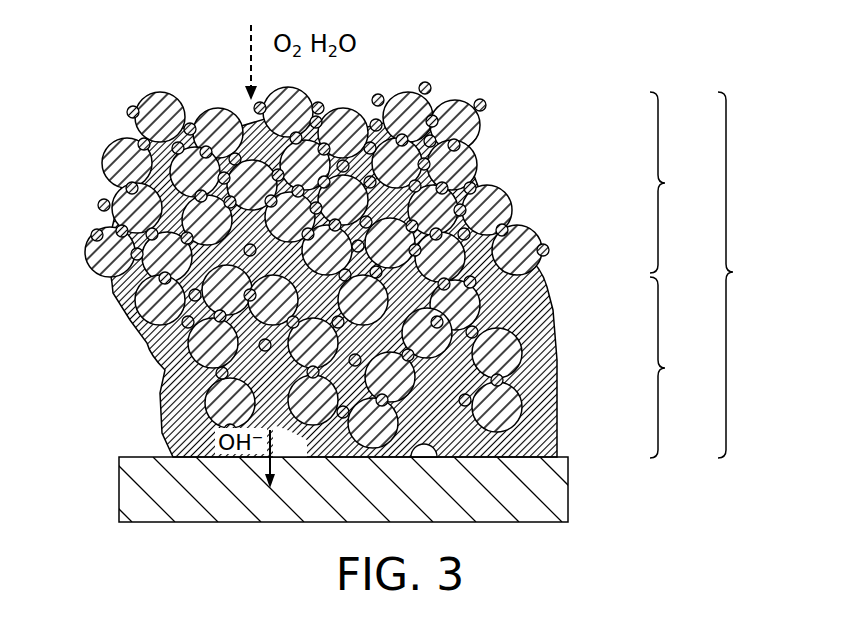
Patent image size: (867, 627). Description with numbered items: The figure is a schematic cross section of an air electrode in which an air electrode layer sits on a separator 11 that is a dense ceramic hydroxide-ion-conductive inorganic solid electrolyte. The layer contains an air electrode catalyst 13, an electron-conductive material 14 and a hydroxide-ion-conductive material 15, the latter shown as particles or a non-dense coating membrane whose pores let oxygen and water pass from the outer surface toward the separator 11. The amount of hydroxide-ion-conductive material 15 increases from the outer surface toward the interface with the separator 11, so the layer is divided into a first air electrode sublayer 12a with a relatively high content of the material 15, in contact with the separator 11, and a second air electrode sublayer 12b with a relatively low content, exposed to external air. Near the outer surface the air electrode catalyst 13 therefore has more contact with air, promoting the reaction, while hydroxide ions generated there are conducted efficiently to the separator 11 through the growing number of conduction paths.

The separator 11 is at (548, 497).
The first air electrode sublayer 12a is at (683, 367).
The second air electrode sublayer 12b is at (683, 182).
The air electrode catalyst 13 is at (429, 84).
The electron-conductive material 14 is at (478, 115).
The hydroxide-ion-conductive material 15 is at (560, 298).